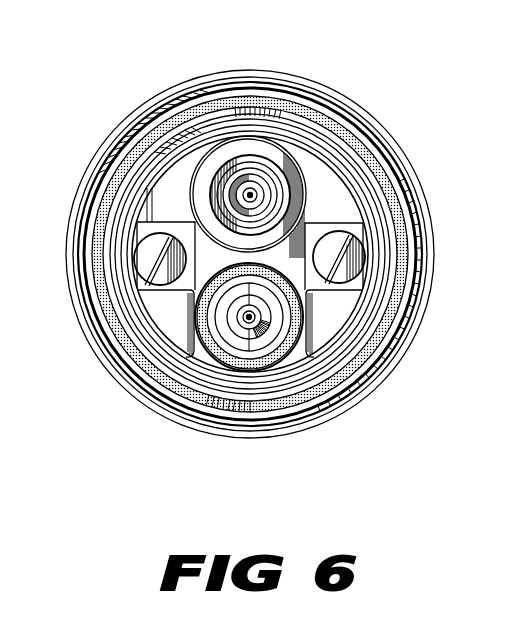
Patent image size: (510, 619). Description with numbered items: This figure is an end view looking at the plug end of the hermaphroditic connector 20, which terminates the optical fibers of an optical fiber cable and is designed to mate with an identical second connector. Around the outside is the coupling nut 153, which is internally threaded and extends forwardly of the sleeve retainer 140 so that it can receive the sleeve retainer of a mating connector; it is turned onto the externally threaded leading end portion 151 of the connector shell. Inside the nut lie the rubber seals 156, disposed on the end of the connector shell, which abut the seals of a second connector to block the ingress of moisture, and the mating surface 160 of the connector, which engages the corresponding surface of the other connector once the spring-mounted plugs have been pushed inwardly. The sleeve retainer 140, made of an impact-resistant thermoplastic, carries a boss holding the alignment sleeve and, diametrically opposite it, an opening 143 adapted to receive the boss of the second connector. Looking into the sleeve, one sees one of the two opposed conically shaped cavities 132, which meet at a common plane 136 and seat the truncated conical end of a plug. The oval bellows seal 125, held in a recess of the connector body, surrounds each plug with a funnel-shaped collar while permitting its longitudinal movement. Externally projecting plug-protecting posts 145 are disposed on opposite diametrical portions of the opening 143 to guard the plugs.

The hermaphroditic connector 20 is at (303, 41).
The coupling nut 153 is at (368, 114).
The leading end portion 151 is at (94, 369).
The seal 156 is at (387, 195).
The mating surface 160 is at (356, 164).
The sleeve retainer 140 is at (198, 181).
The conically shaped cavity 132 is at (218, 212).
The common plane 136 is at (259, 182).
The bellows seal 125 is at (252, 270).
The opening 143 is at (234, 272).
The plug-protecting post 145 is at (176, 328).